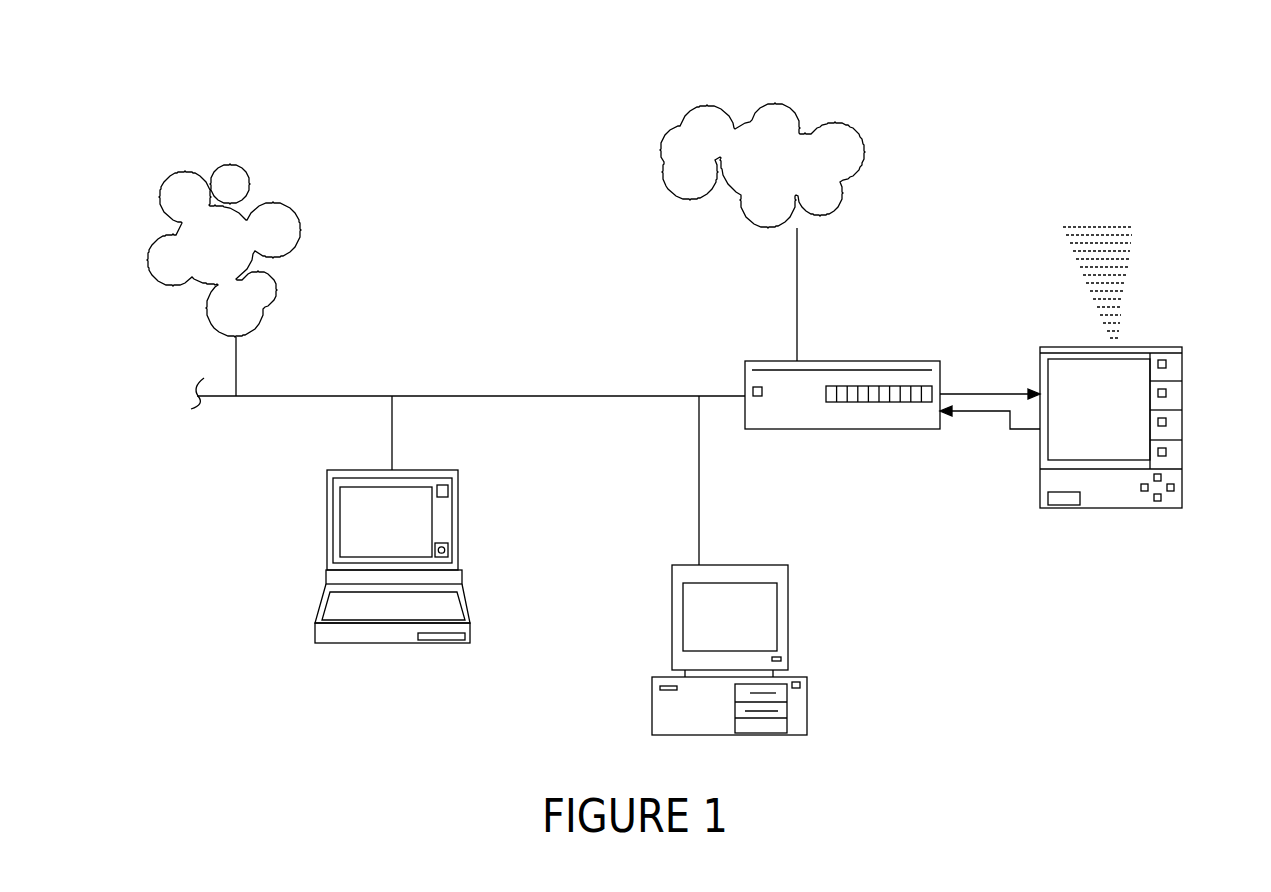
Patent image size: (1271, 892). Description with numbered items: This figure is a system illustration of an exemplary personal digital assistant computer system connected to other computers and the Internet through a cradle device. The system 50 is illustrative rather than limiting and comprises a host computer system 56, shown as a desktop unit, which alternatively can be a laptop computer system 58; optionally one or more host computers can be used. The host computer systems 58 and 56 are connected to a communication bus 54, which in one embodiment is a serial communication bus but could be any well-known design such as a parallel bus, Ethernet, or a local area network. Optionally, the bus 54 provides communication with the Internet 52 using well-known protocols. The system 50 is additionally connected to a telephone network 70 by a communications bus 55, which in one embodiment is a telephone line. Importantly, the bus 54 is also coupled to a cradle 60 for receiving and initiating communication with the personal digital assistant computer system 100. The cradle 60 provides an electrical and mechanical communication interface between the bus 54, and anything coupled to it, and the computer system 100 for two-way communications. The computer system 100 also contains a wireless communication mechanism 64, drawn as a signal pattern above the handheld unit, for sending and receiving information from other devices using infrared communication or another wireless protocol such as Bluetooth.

The system 50 is at (121, 65).
The Internet 52 is at (292, 200).
The communication bus 54 is at (487, 396).
The communications bus 55 is at (797, 310).
The host computer system 56 is at (788, 592).
The laptop computer system 58 is at (432, 470).
The cradle 60 is at (868, 360).
The wireless communication mechanism 64 is at (1063, 265).
The telephone network 70 is at (781, 104).
The personal digital assistant computer system 100 is at (1150, 347).